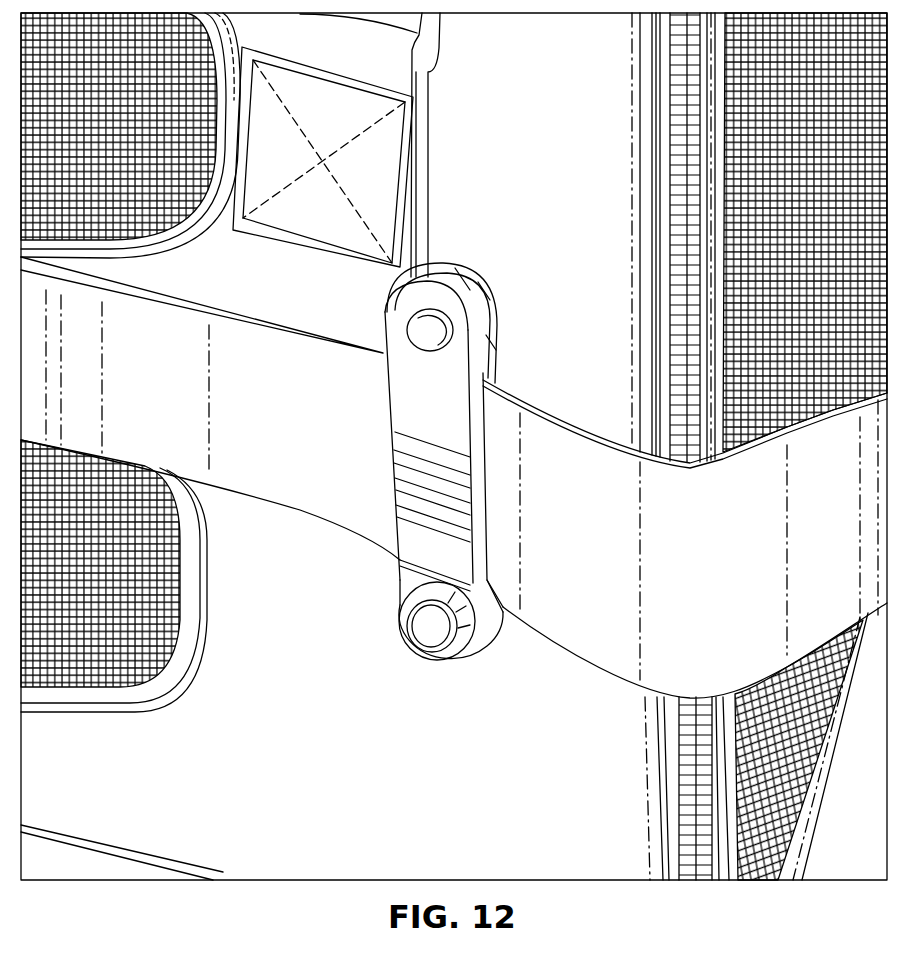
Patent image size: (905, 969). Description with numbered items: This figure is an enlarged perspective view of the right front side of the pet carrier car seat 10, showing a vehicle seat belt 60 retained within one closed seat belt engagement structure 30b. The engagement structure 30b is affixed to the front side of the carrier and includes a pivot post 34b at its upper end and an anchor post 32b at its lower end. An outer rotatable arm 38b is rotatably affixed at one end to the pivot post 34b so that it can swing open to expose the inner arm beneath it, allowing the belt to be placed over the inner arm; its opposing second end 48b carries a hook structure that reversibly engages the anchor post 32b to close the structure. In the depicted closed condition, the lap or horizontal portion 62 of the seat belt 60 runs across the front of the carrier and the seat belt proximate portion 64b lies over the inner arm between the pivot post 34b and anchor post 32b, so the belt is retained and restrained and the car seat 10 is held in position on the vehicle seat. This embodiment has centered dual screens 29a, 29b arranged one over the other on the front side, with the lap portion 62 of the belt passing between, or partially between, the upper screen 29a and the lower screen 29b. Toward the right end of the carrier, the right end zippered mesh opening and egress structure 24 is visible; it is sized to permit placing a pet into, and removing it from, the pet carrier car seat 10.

The pet carrier car seat 10 is at (546, 179).
The right end zippered mesh opening/egress structure 24 is at (737, 128).
The upper dual screen 29a is at (182, 238).
The lower dual screen 29b is at (193, 544).
The seat belt engagement structure 30b is at (419, 505).
The anchor post 32b is at (428, 630).
The pivot post 34b is at (418, 330).
The outer rotatable arm 38b is at (460, 549).
The opposing second end of outer rotatable arm 48b is at (485, 631).
The seat belt 60 is at (637, 480).
The lap/horizontal portion 62 is at (298, 415).
The seat belt proximate portion 64b is at (496, 478).